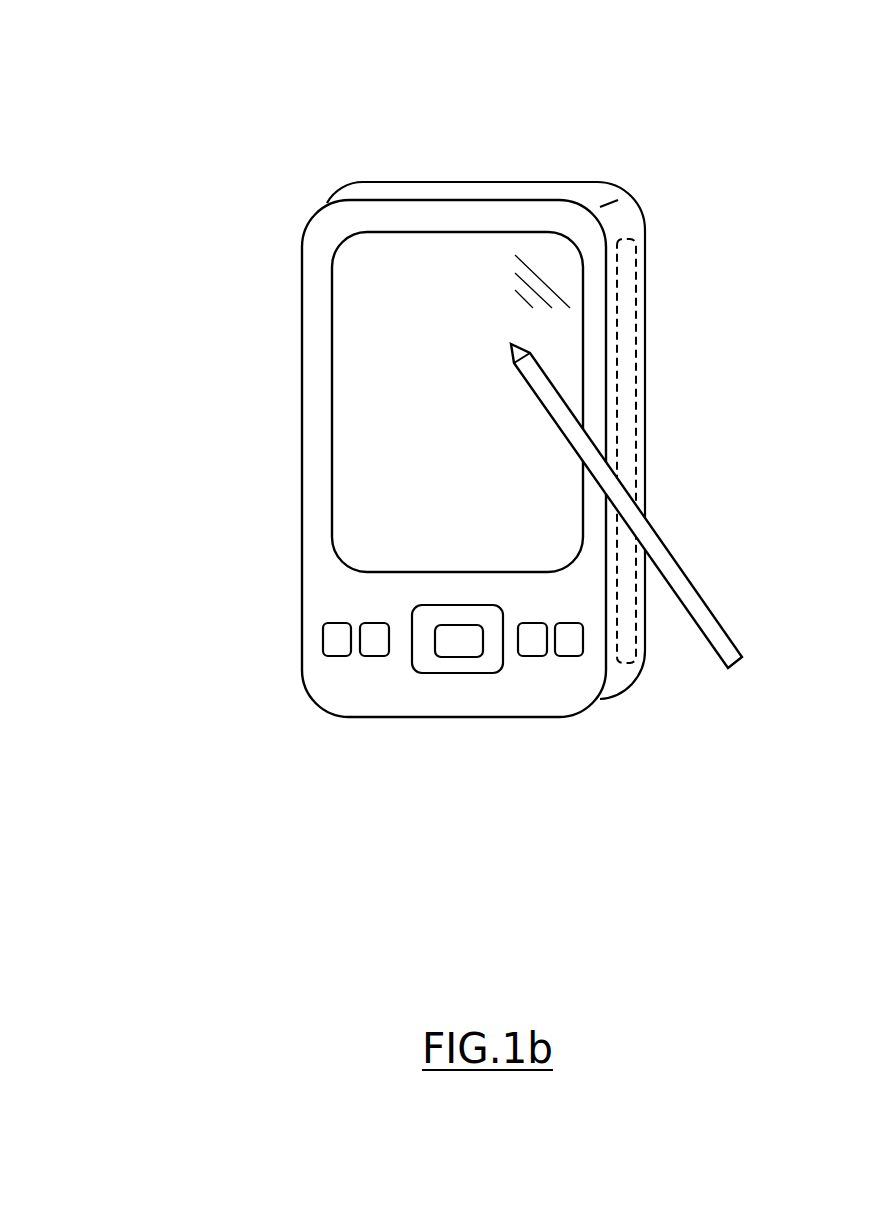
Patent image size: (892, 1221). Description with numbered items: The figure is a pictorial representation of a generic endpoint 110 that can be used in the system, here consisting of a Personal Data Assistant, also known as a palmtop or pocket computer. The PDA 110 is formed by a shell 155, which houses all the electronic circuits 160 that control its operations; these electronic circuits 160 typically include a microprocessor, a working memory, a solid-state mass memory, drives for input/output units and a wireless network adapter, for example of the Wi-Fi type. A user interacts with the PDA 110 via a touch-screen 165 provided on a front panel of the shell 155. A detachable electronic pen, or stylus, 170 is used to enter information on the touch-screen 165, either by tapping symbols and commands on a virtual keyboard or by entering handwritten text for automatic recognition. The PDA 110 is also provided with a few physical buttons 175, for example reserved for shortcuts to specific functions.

The endpoint 110 is at (113, 76).
The shell 155 is at (473, 409).
The electronic circuits 160 is at (687, 444).
The touch-screen 165 is at (397, 290).
The electronic pen 170 is at (651, 506).
The physical buttons 175 is at (453, 686).